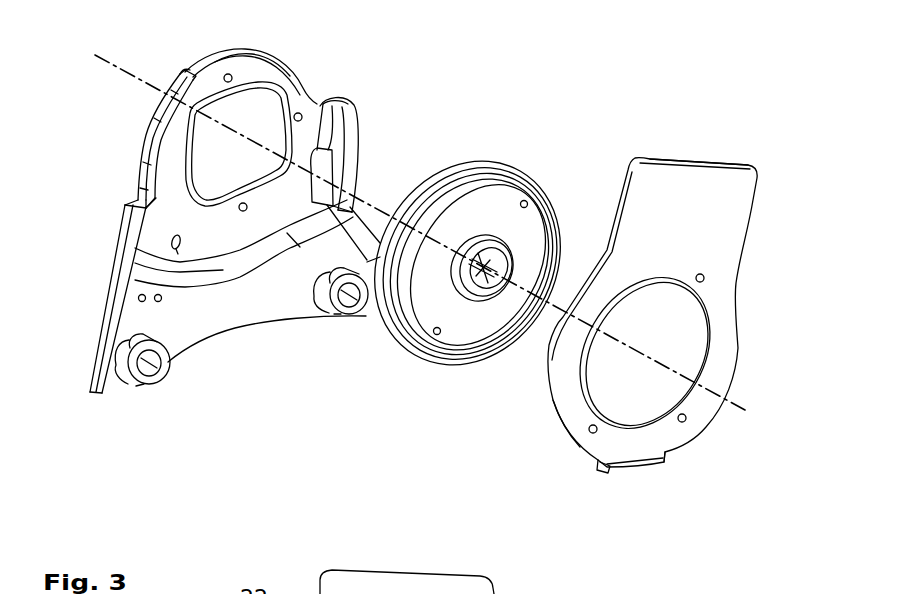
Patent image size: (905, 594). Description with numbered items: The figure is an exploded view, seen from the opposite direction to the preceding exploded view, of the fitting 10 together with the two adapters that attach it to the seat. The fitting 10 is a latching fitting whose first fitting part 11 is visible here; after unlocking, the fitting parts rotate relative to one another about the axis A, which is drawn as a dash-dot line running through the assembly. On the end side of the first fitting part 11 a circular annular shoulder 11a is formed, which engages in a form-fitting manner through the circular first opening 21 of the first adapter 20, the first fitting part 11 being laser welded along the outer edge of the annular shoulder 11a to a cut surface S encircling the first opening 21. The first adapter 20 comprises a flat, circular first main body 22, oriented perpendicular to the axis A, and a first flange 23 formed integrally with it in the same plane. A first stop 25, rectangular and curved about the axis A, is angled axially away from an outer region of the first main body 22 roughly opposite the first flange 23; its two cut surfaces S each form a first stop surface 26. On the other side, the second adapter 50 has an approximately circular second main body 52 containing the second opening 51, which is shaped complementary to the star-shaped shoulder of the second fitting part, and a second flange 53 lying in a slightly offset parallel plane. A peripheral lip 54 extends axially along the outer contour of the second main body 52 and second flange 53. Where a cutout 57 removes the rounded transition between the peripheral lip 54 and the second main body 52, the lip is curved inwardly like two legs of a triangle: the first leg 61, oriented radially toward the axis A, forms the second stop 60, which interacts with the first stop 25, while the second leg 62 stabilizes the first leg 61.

The fitting 10 is at (546, 142).
The first fitting part 11 is at (497, 213).
The annular shoulder 11a is at (457, 207).
The first adapter 20 is at (718, 373).
The first opening 21 is at (663, 348).
The first main body 22 is at (730, 320).
The first flange 23 is at (728, 227).
The first stop 25 is at (627, 473).
The first stop surface 26 is at (663, 462).
The second adapter 50 is at (143, 323).
The second opening 51 is at (263, 117).
The second main body 52 is at (300, 90).
The second flange 53 is at (210, 312).
The peripheral lip 54 is at (345, 127).
The cutout 57 is at (320, 170).
The second stop 60 is at (347, 197).
The first leg 61 is at (146, 200).
The second leg 62 is at (147, 183).
The axis A is at (118, 68).
The cut surface S is at (103, 375).